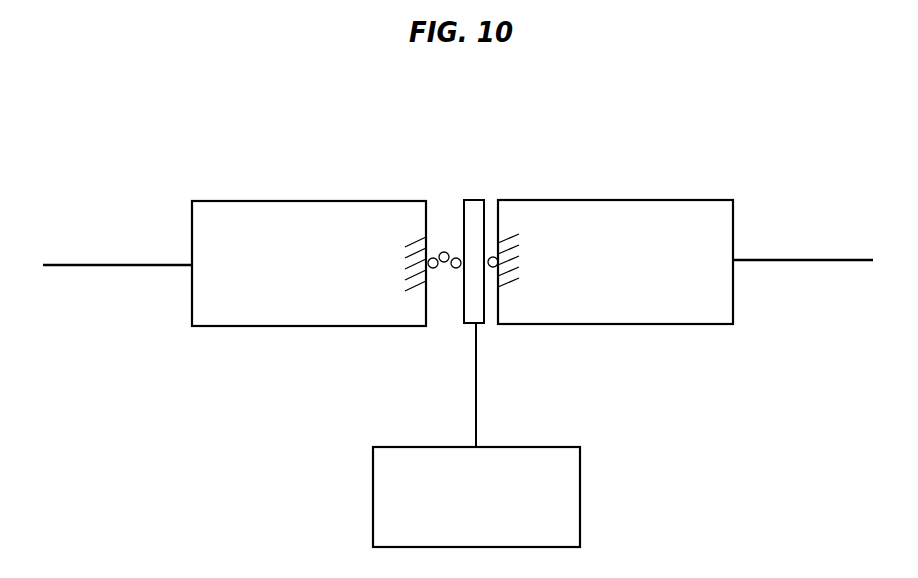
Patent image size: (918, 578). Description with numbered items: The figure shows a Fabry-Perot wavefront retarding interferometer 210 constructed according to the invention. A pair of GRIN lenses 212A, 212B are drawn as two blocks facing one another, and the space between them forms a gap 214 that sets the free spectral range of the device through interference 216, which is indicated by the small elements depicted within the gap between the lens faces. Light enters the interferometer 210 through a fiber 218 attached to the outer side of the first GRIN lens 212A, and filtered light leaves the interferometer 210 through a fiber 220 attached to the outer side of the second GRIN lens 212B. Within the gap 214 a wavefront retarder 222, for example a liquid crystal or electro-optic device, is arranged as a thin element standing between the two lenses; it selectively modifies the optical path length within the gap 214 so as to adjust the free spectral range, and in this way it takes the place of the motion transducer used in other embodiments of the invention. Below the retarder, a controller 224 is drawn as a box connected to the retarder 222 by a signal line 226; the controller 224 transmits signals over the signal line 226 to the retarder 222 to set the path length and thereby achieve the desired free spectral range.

The Fabry-Perot interferometer 210 is at (682, 136).
The GRIN lens 212A is at (285, 298).
The GRIN lens 212B is at (640, 297).
The gap 214 is at (447, 209).
The interference 216 is at (444, 264).
The fiber 218 is at (136, 263).
The fiber 220 is at (791, 258).
The wavefront retarder 222 is at (478, 198).
The controller 224 is at (459, 523).
The signal line 226 is at (477, 386).